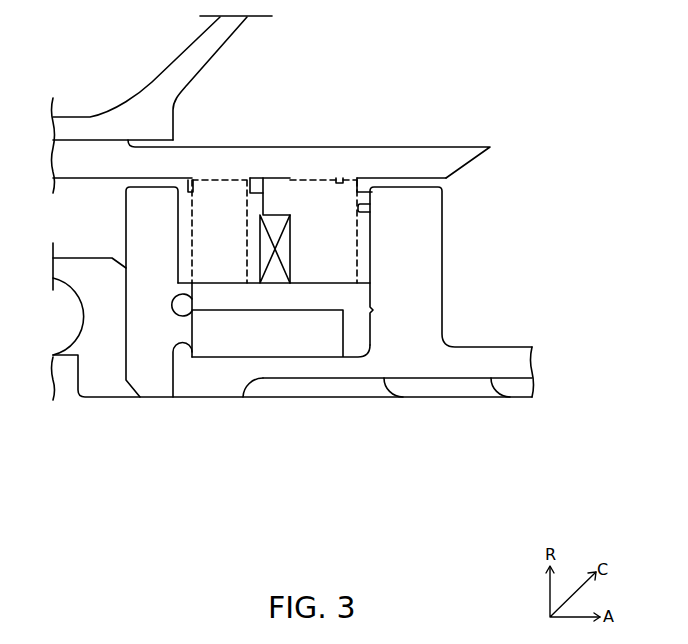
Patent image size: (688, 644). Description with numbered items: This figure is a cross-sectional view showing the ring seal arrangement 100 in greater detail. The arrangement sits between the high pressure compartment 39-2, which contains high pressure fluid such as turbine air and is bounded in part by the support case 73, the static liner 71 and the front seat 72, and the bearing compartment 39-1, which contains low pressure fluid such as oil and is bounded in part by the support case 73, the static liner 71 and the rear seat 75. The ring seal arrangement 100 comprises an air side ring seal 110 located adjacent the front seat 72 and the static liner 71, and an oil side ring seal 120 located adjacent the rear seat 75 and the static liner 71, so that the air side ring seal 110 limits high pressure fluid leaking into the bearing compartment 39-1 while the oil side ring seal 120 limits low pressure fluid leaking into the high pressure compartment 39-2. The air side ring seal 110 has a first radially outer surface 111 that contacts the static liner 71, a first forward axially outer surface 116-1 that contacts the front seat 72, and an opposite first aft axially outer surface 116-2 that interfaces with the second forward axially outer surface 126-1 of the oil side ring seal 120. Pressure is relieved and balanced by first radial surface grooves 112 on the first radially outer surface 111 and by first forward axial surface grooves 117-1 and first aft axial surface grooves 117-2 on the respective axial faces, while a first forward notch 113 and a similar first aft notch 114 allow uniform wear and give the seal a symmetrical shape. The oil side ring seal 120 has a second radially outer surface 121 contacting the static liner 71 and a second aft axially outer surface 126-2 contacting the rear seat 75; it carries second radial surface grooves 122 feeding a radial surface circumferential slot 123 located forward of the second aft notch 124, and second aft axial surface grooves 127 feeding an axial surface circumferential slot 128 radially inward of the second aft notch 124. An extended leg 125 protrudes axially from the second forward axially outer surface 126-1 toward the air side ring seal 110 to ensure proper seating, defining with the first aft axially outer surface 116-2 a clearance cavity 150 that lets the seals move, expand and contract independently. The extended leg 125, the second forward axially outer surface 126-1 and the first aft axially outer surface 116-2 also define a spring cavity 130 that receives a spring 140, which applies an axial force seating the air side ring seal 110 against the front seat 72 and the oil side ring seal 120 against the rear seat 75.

The ring seal arrangement 100 is at (408, 75).
The static liner 71 is at (83, 157).
The front seat 72 is at (153, 370).
The support case 73 is at (137, 107).
The rear seat 75 is at (422, 327).
The bearing compartment 39-1 is at (517, 290).
The high pressure compartment 39-2 is at (102, 226).
The air side ring seal 110 is at (235, 244).
The first radially outer surface 111 is at (212, 178).
The first radial surface groove 112 is at (232, 182).
The first forward notch 113 is at (192, 187).
The first aft notch 114 is at (258, 180).
The first forward axially outer surface 116-1 is at (178, 242).
The first aft axially outer surface 116-2 is at (260, 273).
The first forward axial surface groove 117-1 is at (183, 282).
The first aft axial surface groove 117-2 is at (253, 273).
The oil side ring seal 120 is at (337, 244).
The second radially outer surface 121 is at (317, 177).
The second radial surface groove 122 is at (342, 178).
The radial surface circumferential slot 123 is at (360, 186).
The second aft notch 124 is at (363, 190).
The extended leg 125 is at (291, 186).
The second forward axially outer surface 126-1 is at (292, 267).
The second aft axially outer surface 126-2 is at (371, 267).
The second aft axial surface groove 127 is at (366, 243).
The axial surface circumferential slot 128 is at (368, 209).
The spring cavity 130 is at (262, 268).
The spring 140 is at (277, 284).
The clearance cavity 150 is at (281, 196).